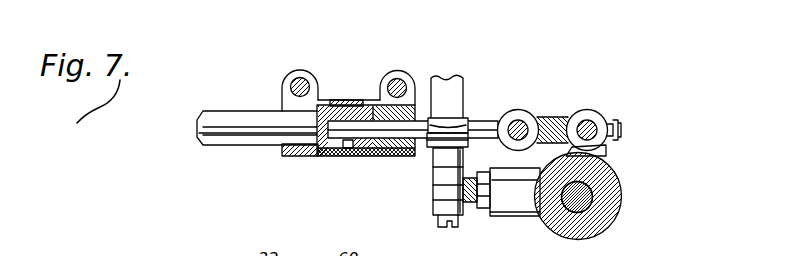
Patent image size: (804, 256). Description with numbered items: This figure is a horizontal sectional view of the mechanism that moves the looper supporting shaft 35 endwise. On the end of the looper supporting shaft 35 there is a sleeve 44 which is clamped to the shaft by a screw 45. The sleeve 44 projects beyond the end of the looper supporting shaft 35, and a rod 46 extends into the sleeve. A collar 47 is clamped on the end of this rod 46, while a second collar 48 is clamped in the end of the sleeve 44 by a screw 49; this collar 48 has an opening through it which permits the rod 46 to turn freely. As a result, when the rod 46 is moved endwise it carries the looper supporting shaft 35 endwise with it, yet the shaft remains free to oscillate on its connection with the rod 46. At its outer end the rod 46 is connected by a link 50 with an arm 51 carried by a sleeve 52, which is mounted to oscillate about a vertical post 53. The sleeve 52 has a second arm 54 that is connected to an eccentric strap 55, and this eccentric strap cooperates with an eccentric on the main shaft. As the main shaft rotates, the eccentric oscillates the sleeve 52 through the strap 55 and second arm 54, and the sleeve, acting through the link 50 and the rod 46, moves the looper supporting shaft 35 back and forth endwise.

The looper supporting shaft 35 is at (237, 121).
The sleeve 44 is at (303, 158).
The screw 45 is at (299, 77).
The rod 46 is at (388, 158).
The collar 47 is at (347, 99).
The collar 48 is at (416, 112).
The screw 49 is at (397, 78).
The link 50 is at (557, 117).
The arm 51 is at (606, 151).
The sleeve 52 is at (620, 212).
The vertical post 53 is at (593, 212).
The second arm 54 is at (520, 200).
The eccentric strap 55 is at (445, 88).